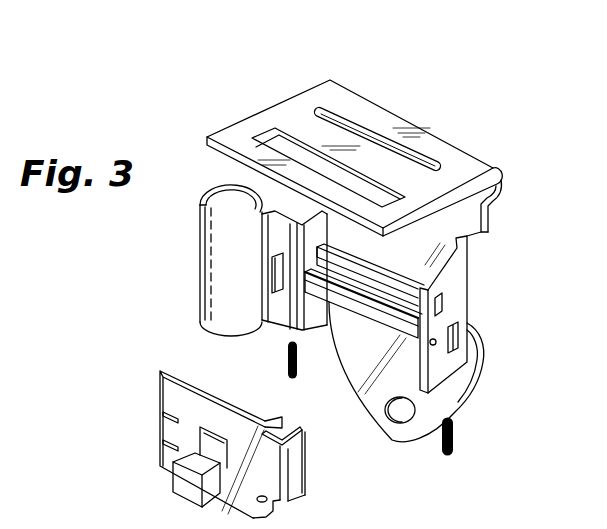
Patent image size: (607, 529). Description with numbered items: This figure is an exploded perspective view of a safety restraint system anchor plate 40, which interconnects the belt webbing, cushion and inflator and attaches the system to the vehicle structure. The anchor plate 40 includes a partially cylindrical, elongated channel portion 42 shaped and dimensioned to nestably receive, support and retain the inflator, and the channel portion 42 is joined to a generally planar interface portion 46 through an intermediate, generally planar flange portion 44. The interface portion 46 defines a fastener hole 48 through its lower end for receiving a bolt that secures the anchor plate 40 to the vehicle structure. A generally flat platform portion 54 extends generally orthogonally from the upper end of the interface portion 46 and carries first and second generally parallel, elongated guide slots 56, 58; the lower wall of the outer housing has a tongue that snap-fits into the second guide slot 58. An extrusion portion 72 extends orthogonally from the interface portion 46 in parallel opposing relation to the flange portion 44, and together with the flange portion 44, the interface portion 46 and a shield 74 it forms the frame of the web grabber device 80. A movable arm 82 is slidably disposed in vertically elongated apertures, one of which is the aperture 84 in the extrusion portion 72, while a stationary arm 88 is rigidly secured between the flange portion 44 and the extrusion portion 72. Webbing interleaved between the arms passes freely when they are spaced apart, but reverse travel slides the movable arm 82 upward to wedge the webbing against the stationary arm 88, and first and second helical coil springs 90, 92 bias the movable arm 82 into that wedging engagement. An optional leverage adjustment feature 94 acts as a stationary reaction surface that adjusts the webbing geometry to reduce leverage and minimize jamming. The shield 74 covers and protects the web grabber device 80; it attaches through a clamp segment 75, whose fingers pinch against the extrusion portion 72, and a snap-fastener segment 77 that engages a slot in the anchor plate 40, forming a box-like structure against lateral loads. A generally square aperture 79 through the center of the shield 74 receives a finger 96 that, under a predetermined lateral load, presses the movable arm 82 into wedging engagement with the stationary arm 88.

The anchor plate 40 is at (534, 172).
The channel portion 42 is at (214, 258).
The flange portion 44 is at (299, 306).
The interface portion 46 is at (372, 412).
The fastener hole 48 is at (384, 404).
The platform portion 54 is at (240, 139).
The first guide slot 56 is at (362, 124).
The second guide slot 58 is at (298, 143).
The extrusion portion 72 is at (455, 277).
The shield 74 is at (166, 371).
The clamp segment 75 is at (301, 470).
The snap-fastener segment 77 is at (160, 424).
The square aperture 79 is at (221, 436).
The web grabber device 80 is at (316, 262).
The movable arm 82 is at (407, 340).
The aperture 84 is at (466, 333).
The stationary arm 88 is at (404, 288).
The first helical coil spring 90 is at (455, 420).
The second helical coil spring 92 is at (287, 353).
The leverage adjustment feature 94 is at (365, 310).
The finger 96 is at (195, 460).